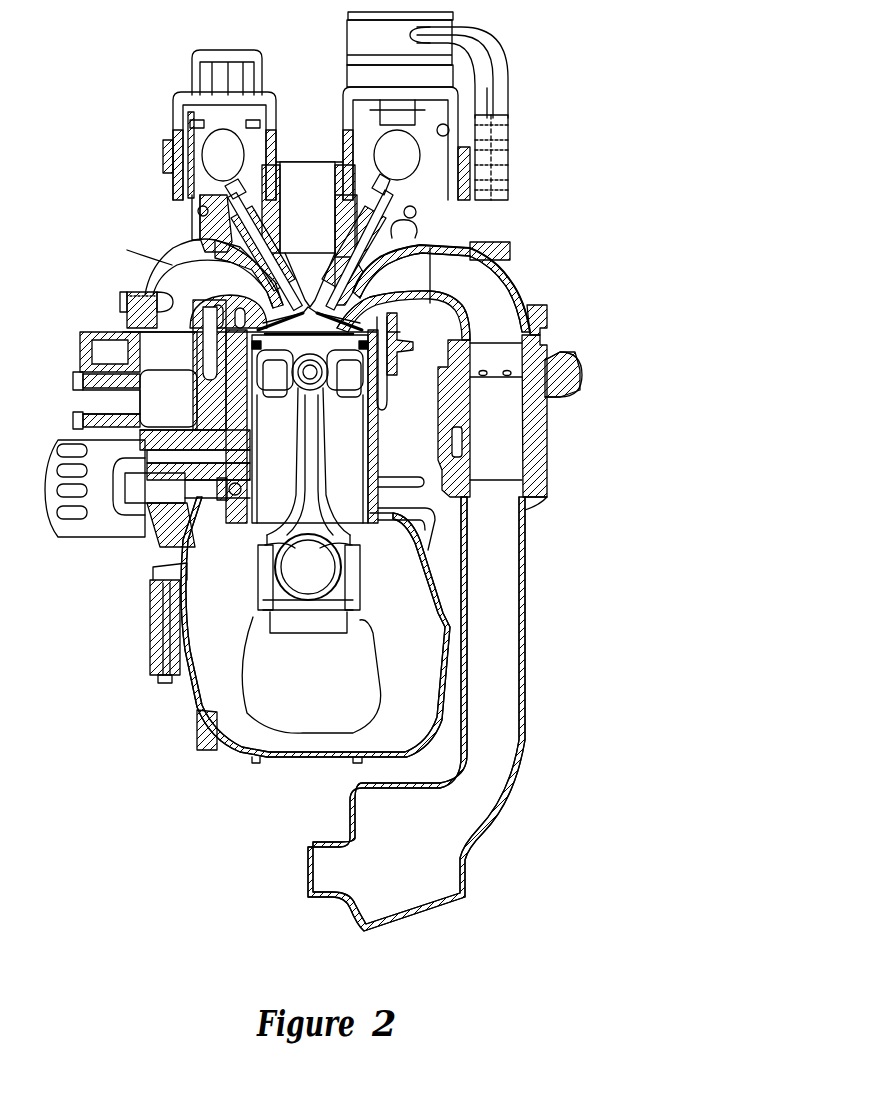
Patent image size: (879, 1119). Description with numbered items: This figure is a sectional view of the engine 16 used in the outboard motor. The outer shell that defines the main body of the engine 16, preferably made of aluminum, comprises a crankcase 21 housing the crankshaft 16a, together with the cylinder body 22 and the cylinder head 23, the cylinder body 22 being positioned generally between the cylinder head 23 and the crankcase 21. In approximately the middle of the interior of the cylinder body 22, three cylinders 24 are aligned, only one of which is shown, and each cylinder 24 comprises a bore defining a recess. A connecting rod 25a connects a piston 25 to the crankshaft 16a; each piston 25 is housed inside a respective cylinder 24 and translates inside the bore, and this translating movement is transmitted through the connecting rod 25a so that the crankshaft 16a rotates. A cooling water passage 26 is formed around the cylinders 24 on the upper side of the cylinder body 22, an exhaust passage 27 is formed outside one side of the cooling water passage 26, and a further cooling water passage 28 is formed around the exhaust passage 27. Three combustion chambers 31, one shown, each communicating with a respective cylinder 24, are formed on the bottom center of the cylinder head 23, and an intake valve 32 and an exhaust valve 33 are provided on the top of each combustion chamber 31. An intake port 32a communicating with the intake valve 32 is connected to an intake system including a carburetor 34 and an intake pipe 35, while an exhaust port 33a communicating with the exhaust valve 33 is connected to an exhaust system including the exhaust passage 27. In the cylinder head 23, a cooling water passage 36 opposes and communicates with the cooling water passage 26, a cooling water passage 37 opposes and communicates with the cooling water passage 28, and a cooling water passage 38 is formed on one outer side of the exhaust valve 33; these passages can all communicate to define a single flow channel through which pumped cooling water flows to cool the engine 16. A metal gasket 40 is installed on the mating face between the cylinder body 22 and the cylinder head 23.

The engine 16 is at (563, 170).
The crankshaft 16a is at (337, 568).
The crankcase 21 is at (197, 713).
The cylinder body 22 is at (222, 478).
The cylinder head 23 is at (197, 218).
The cylinder 24 is at (377, 443).
The piston 25 is at (310, 484).
The connecting rod 25a is at (340, 512).
The cooling water passage 26 is at (233, 387).
The exhaust passage 27 is at (125, 397).
The cooling water passage 28 is at (165, 365).
The combustion chamber 31 is at (290, 380).
The intake valve 32 is at (357, 280).
The intake port 32a is at (418, 288).
The exhaust valve 33 is at (260, 292).
The exhaust port 33a is at (165, 283).
The carburetor 34 is at (547, 425).
The intake pipe 35 is at (530, 520).
The cooling water passage 36 is at (310, 262).
The cooling water passage 37 is at (150, 320).
The cooling water passage 38 is at (197, 237).
The metal gasket 40 is at (213, 347).